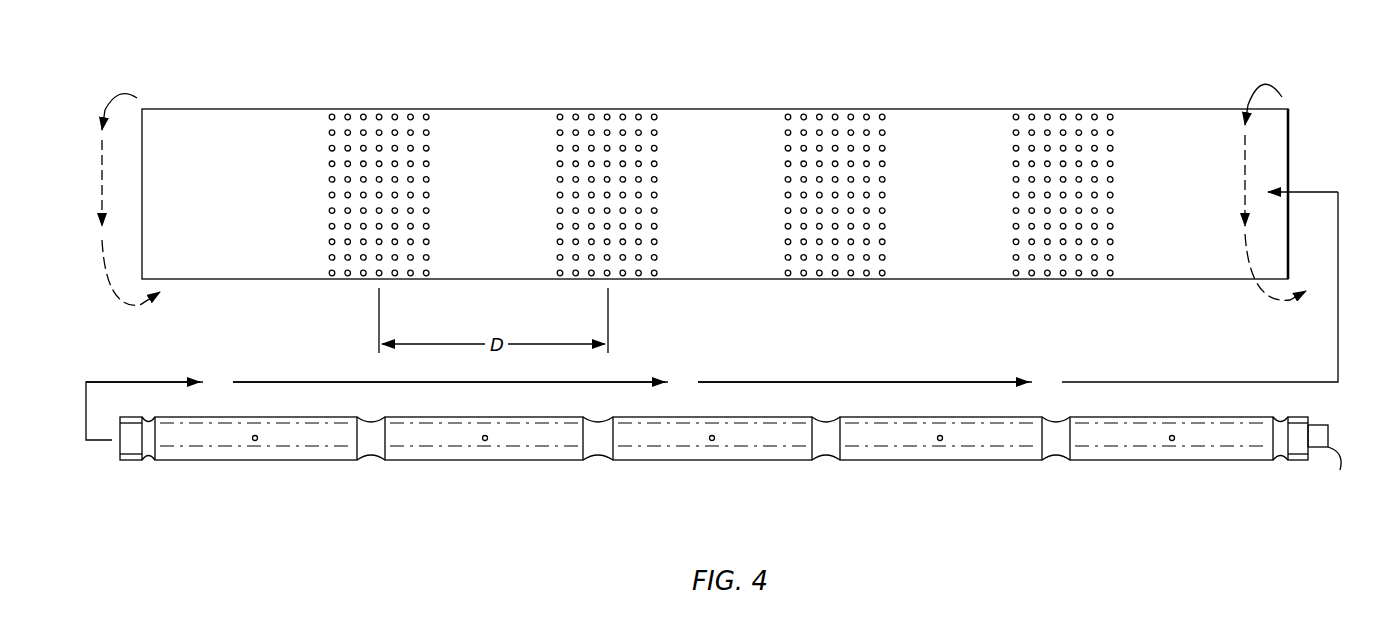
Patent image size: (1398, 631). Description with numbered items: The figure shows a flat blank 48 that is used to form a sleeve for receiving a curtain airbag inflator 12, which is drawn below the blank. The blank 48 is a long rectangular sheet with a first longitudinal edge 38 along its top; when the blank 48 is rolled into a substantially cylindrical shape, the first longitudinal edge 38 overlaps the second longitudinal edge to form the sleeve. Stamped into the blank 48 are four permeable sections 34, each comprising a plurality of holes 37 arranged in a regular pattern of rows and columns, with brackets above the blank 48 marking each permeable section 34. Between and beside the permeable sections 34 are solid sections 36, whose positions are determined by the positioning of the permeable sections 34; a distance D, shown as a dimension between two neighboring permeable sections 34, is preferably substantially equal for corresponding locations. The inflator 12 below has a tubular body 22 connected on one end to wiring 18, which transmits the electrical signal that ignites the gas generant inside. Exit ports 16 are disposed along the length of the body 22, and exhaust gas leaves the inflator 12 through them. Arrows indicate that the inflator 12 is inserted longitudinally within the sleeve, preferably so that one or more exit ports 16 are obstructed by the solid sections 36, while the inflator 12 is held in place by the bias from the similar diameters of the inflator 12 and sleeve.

The curtain airbag inflator 12 is at (663, 490).
The exit ports 16 is at (256, 441).
The wiring 18 is at (1328, 432).
The tubular body 22 is at (798, 460).
The permeable sections 34 is at (330, 103).
The solid sections 36 is at (163, 103).
The holes 37 is at (332, 227).
The first longitudinal edge 38 is at (1240, 94).
The blank 48 is at (1290, 122).